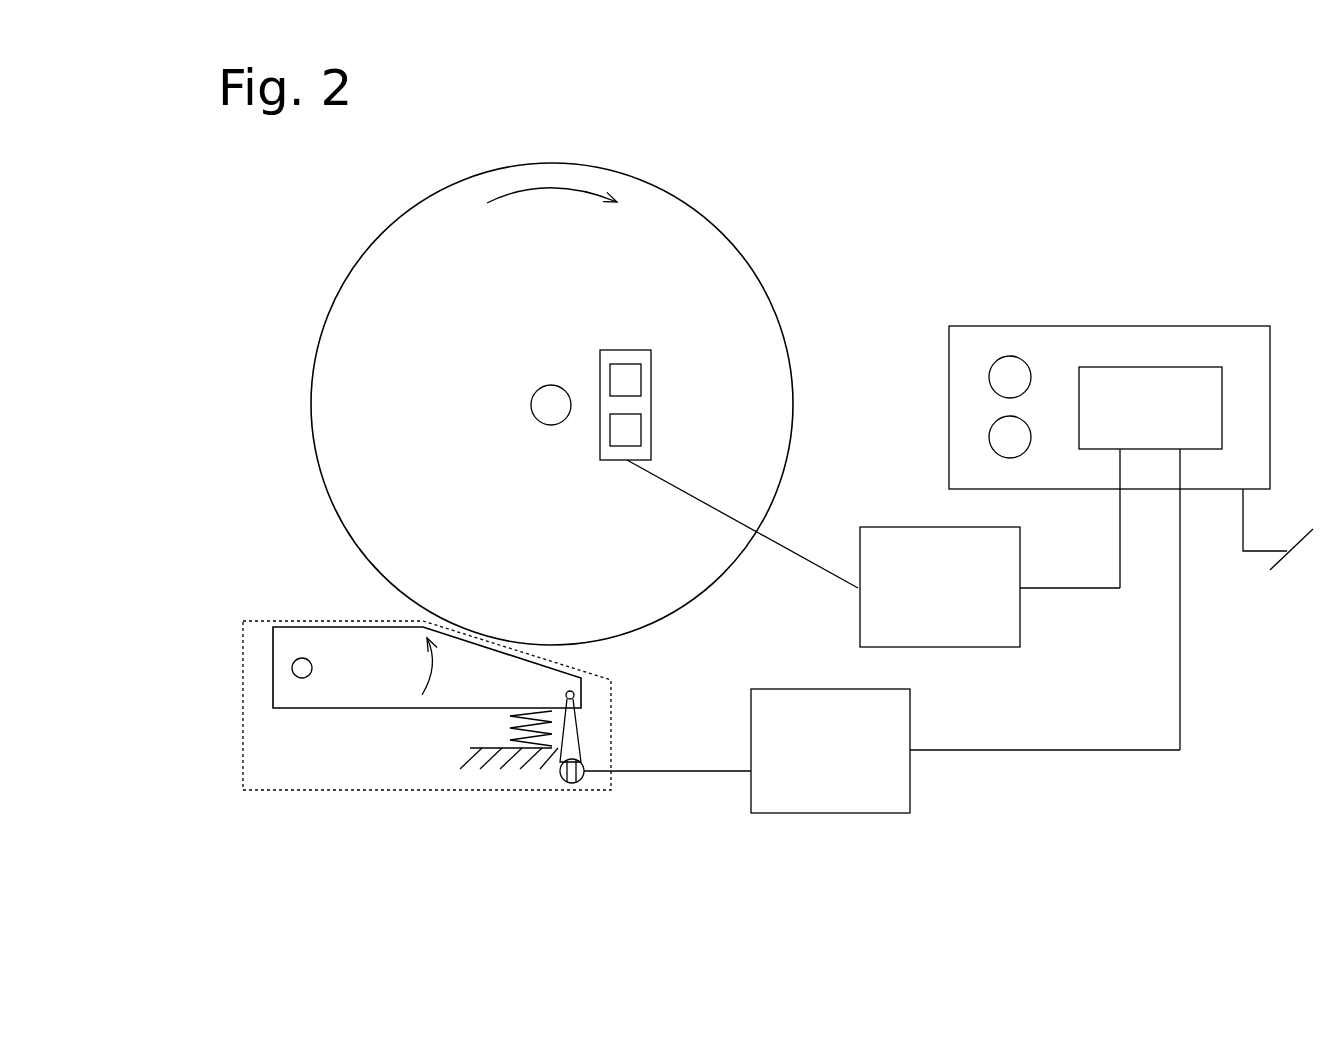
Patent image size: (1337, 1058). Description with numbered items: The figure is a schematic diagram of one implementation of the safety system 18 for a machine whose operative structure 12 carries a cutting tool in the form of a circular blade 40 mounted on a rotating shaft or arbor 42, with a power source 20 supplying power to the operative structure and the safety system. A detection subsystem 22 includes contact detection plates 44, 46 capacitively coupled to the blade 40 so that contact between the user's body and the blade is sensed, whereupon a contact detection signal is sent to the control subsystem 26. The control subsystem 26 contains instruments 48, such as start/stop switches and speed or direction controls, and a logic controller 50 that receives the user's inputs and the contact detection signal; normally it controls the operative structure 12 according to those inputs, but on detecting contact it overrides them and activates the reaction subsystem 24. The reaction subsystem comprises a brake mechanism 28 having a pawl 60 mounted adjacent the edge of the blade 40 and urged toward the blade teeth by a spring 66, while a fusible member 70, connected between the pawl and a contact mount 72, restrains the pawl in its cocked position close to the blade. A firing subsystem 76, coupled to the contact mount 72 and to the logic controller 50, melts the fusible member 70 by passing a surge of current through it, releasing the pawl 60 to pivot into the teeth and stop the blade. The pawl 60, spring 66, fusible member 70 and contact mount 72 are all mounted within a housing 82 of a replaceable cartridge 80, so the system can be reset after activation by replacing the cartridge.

The operative structure 12 is at (776, 178).
The safety system 18 is at (1096, 218).
The power source 20 is at (1299, 565).
The detection subsystem 22 is at (997, 577).
The reaction subsystem 24 is at (866, 855).
The control subsystem 26 is at (1153, 327).
The brake mechanism 28 is at (324, 735).
The circular blade 40 is at (460, 278).
The arbor 42 is at (542, 406).
The contact detection plate 44 is at (637, 374).
The contact detection plate 46 is at (637, 426).
The instruments 48 is at (998, 377).
The logic controller 50 is at (1197, 412).
The pawl 60 is at (328, 638).
The spring 66 is at (485, 730).
The fusible member 70 is at (582, 748).
The contact mount 72 is at (567, 777).
The firing subsystem 76 is at (888, 737).
The replaceable cartridge 80 is at (279, 827).
The housing 82 is at (342, 792).